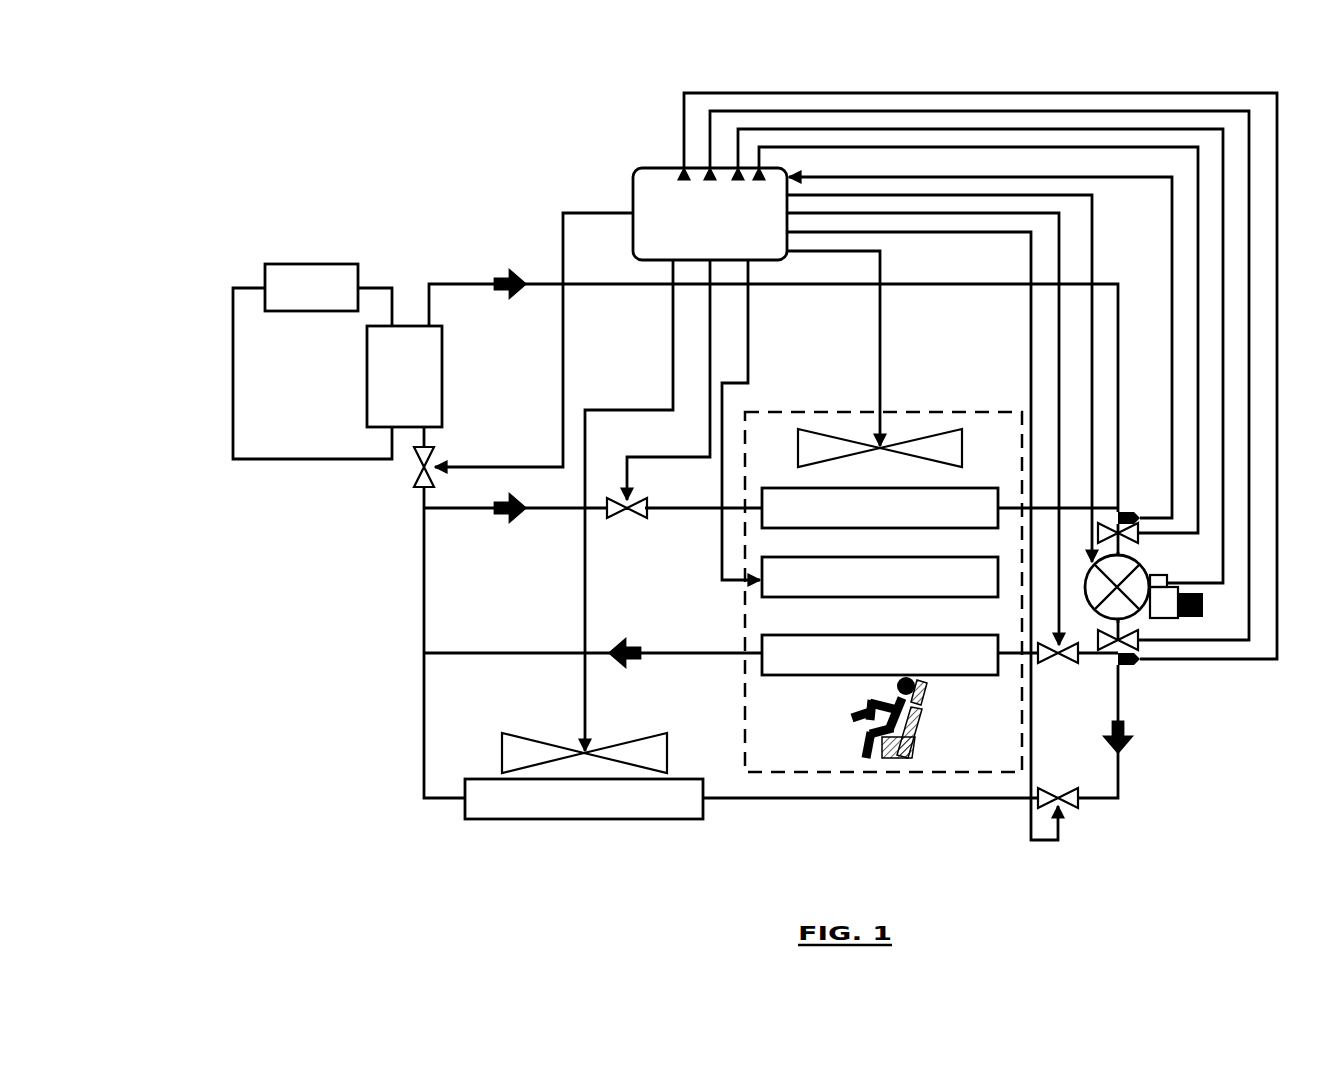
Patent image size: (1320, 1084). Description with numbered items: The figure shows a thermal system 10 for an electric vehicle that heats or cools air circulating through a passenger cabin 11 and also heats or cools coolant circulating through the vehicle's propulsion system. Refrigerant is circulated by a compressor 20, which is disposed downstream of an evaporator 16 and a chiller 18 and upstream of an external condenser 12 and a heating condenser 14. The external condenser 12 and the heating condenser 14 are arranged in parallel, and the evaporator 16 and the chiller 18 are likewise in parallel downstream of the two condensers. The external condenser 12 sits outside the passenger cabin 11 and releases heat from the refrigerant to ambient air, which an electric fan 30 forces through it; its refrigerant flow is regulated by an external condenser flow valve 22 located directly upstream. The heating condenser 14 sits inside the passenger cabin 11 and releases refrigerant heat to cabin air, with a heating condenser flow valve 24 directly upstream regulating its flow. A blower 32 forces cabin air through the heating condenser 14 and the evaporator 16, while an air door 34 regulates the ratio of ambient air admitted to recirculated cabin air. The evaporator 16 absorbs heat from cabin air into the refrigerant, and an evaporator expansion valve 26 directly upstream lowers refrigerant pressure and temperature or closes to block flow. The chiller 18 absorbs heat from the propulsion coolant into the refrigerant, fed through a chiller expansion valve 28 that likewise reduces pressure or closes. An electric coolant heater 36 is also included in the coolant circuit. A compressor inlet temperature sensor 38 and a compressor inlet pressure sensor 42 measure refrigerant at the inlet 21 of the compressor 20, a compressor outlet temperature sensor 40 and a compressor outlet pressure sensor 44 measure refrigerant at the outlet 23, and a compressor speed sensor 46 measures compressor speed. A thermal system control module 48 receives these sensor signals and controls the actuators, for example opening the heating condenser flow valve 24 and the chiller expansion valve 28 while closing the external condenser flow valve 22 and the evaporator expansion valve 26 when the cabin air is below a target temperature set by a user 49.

The thermal system 10 is at (222, 76).
The passenger cabin 11 is at (745, 692).
The external condenser 12 is at (663, 779).
The heating condenser 14 is at (807, 676).
The evaporator 16 is at (950, 488).
The chiller 18 is at (442, 340).
The compressor 20 is at (1100, 615).
The compressor inlet 21 is at (1118, 552).
The external condenser flow valve 22 is at (1048, 790).
The compressor outlet 23 is at (1118, 622).
The heating condenser flow valve 24 is at (1050, 657).
The evaporator expansion valve 26 is at (645, 512).
The chiller expansion valve 28 is at (432, 450).
The electric fan 30 is at (645, 737).
The blower 32 is at (913, 457).
The air door 34 is at (925, 557).
The electric coolant heater 36 is at (358, 264).
The compressor inlet temperature sensor 38 is at (1141, 488).
The compressor outlet temperature sensor 40 is at (1128, 668).
The compressor inlet pressure sensor 42 is at (1137, 537).
The compressor outlet pressure sensor 44 is at (1137, 641).
The compressor speed sensor 46 is at (1167, 585).
The thermal system control module 48 is at (660, 166).
The user 49 is at (895, 686).